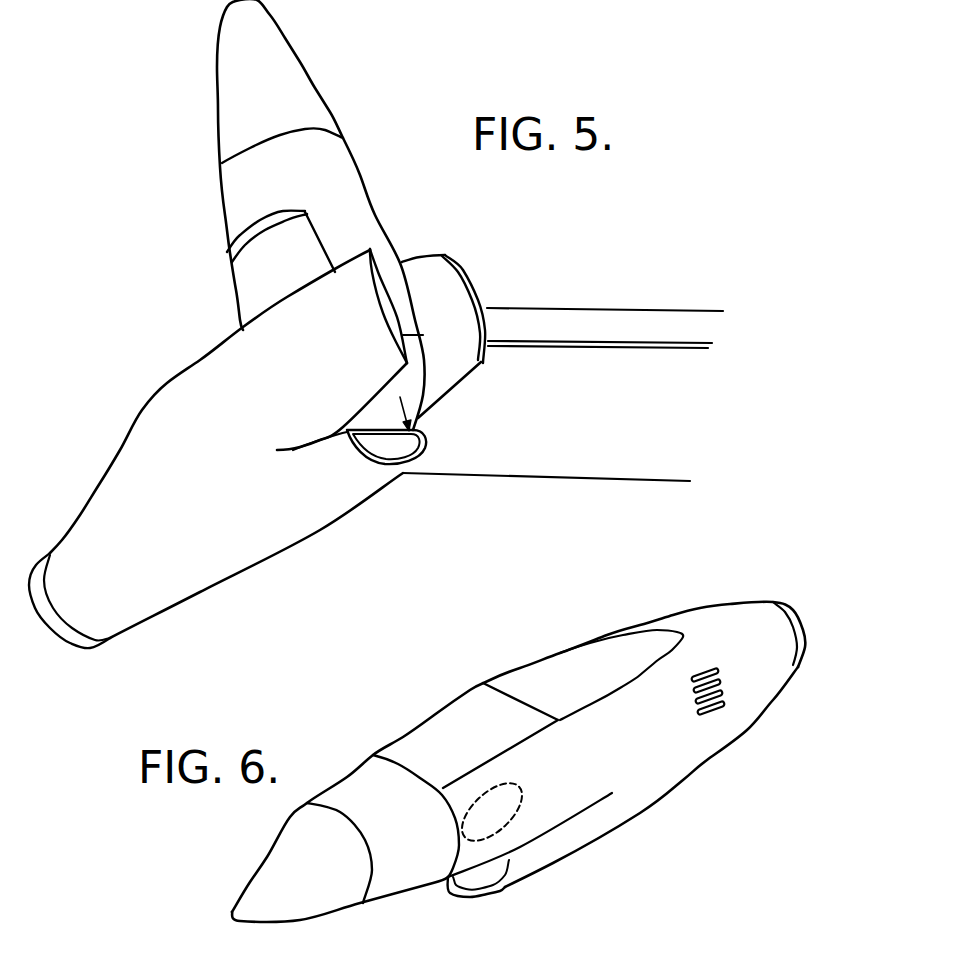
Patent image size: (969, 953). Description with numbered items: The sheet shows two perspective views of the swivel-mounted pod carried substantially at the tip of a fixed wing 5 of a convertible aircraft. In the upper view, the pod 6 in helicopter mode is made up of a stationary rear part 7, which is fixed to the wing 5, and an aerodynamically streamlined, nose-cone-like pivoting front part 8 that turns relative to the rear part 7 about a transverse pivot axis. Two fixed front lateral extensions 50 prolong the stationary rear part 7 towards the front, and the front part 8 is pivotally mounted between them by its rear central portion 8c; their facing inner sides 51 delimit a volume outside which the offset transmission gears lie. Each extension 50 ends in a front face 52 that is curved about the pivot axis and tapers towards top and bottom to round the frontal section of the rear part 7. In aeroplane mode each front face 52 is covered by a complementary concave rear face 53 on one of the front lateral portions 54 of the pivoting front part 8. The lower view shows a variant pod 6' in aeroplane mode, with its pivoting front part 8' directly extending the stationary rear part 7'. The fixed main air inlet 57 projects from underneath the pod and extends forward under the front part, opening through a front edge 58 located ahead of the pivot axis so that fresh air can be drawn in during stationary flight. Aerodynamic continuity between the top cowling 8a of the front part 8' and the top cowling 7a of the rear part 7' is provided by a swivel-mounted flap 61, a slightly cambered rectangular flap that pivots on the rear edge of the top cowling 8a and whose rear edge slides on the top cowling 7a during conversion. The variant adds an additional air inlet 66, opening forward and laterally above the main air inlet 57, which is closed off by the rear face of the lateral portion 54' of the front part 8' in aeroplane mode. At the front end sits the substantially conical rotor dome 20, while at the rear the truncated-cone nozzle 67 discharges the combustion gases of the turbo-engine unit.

In FIG. 5, the fixed wing 5 is at (620, 330).
In FIG. 5, the swivel-mounted pod 6 is at (370, 444).
In FIG. 5, the stationary rear part 7 is at (69, 530).
In FIG. 5, the pivoting front part 8 is at (321, 215).
In FIG. 5, the rear central portion 8c is at (413, 460).
In FIG. 5, the fixed front lateral extension 50 is at (355, 297).
In FIG. 5, the inner side 51 is at (468, 356).
In FIG. 5, the front face 52 is at (390, 327).
In FIG. 5, the rear face 53 is at (250, 234).
In FIG. 5, the front lateral portion 54 is at (244, 162).
In FIG. 6, the pod variant 6' is at (528, 762).
In FIG. 6, the stationary rear part 7' is at (623, 777).
In FIG. 6, the top cowling of the stationary rear part 7a is at (583, 663).
In FIG. 6, the pivoting front part 8' is at (376, 927).
In FIG. 6, the top cowling of the pivoting front part 8a is at (355, 790).
In FIG. 6, the dome 20 is at (277, 863).
In FIG. 6, the lateral portion 54' is at (416, 854).
In FIG. 6, the air inlet 57 is at (498, 867).
In FIG. 6, the front edge 58 is at (463, 893).
In FIG. 6, the swivel-mounted flap 61 is at (425, 737).
In FIG. 6, the additional air inlet 66 is at (512, 820).
In FIG. 6, the nozzle 67 is at (680, 810).